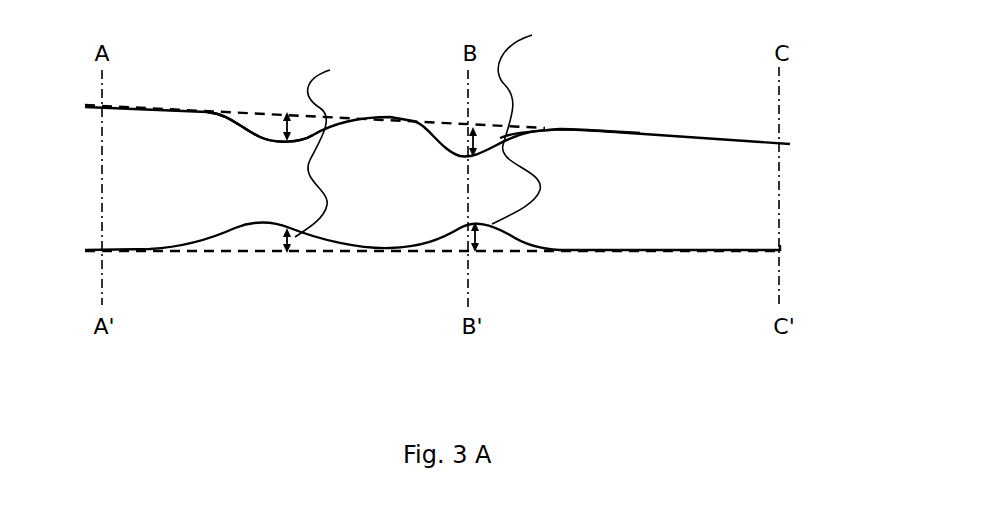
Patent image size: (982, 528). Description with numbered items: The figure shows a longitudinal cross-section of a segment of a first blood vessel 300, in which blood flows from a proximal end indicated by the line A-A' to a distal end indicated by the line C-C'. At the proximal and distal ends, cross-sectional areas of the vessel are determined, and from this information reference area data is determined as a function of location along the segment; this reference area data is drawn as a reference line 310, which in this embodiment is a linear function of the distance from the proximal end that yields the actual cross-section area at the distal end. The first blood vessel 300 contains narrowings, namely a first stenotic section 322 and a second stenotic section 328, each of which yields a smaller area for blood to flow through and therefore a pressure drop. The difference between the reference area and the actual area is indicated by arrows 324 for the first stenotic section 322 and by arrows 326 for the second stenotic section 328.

The first blood vessel 300 is at (217, 200).
The reference line 310 is at (440, 122).
The first stenotic section 322 is at (265, 100).
The arrows 324 is at (290, 130).
The arrows 326 is at (478, 150).
The second stenotic section 328 is at (532, 119).